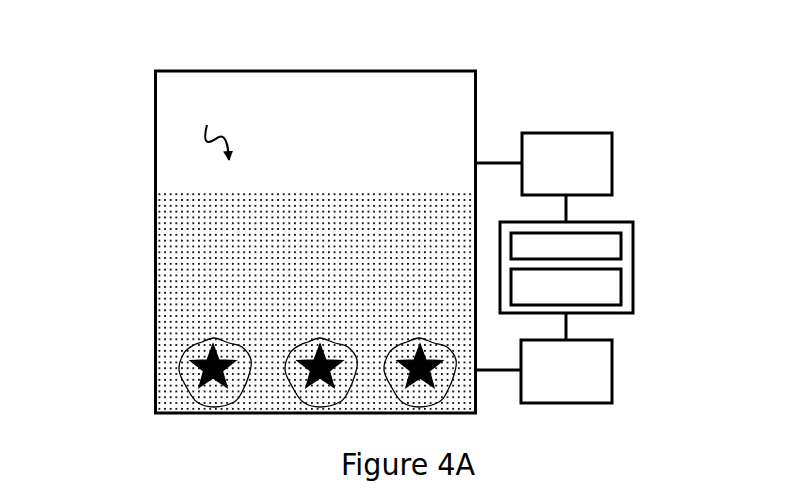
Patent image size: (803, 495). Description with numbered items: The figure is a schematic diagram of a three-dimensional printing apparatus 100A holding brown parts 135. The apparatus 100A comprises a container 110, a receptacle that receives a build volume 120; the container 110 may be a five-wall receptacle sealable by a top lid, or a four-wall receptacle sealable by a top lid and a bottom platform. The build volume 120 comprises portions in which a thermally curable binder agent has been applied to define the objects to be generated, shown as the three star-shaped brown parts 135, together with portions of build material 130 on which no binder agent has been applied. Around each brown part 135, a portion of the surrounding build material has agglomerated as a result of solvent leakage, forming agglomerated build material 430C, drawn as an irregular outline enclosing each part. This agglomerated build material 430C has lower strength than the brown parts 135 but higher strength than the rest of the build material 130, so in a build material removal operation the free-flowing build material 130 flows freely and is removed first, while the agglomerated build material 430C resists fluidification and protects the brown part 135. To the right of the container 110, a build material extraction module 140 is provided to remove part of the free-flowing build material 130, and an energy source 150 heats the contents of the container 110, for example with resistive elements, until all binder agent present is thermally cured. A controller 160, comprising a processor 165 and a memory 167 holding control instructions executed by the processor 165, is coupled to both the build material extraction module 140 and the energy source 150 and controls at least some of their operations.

The 3D printing apparatus 100A is at (106, 112).
The container 110 is at (303, 70).
The build volume 120 is at (214, 130).
The build material 130 is at (323, 210).
The brown parts 135 is at (229, 356).
The agglomerated build material 430C is at (198, 340).
The energy source 150 is at (567, 132).
The controller 160 is at (618, 221).
The processor 165 is at (621, 243).
The memory 167 is at (621, 287).
The build material extraction module 140 is at (612, 357).